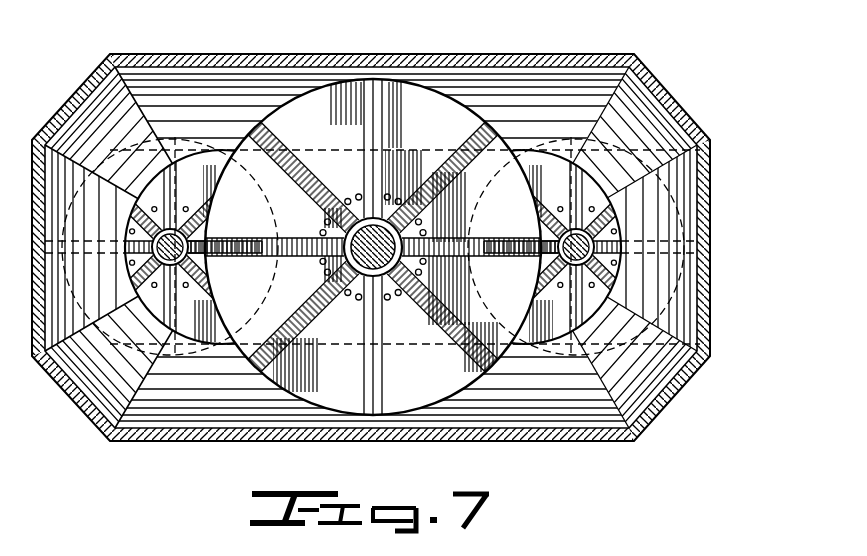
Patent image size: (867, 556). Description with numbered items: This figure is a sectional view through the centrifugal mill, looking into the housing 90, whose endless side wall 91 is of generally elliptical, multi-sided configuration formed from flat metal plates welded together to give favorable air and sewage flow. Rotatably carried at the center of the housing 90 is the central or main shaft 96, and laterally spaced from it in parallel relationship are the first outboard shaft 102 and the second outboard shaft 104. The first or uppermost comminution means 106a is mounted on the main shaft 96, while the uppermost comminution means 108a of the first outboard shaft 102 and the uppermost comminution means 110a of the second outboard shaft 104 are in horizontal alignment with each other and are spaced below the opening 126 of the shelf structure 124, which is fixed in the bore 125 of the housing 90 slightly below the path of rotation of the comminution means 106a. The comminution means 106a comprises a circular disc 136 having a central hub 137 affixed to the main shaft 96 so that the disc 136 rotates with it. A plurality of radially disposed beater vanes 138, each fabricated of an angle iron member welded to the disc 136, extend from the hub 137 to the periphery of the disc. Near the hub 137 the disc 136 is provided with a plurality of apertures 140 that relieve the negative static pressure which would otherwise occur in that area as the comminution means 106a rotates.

The housing 90 is at (542, 50).
The endless side wall 91 is at (484, 66).
The central or main shaft 96 is at (401, 240).
The first outboard shaft 102 is at (202, 241).
The second outboard shaft 104 is at (490, 312).
The first or uppermost comminution means 106a is at (432, 246).
The uppermost comminution means of the first outboard shaft 108a is at (170, 244).
The uppermost comminution means of the second outboard shaft 110a is at (530, 162).
The shelf structure 124 is at (684, 198).
The bore 125 is at (714, 266).
The opening 126 is at (538, 333).
The circular disc 136 is at (214, 302).
The central hub 137 is at (200, 253).
The beater vanes 138 is at (323, 152).
The apertures 140 is at (390, 299).